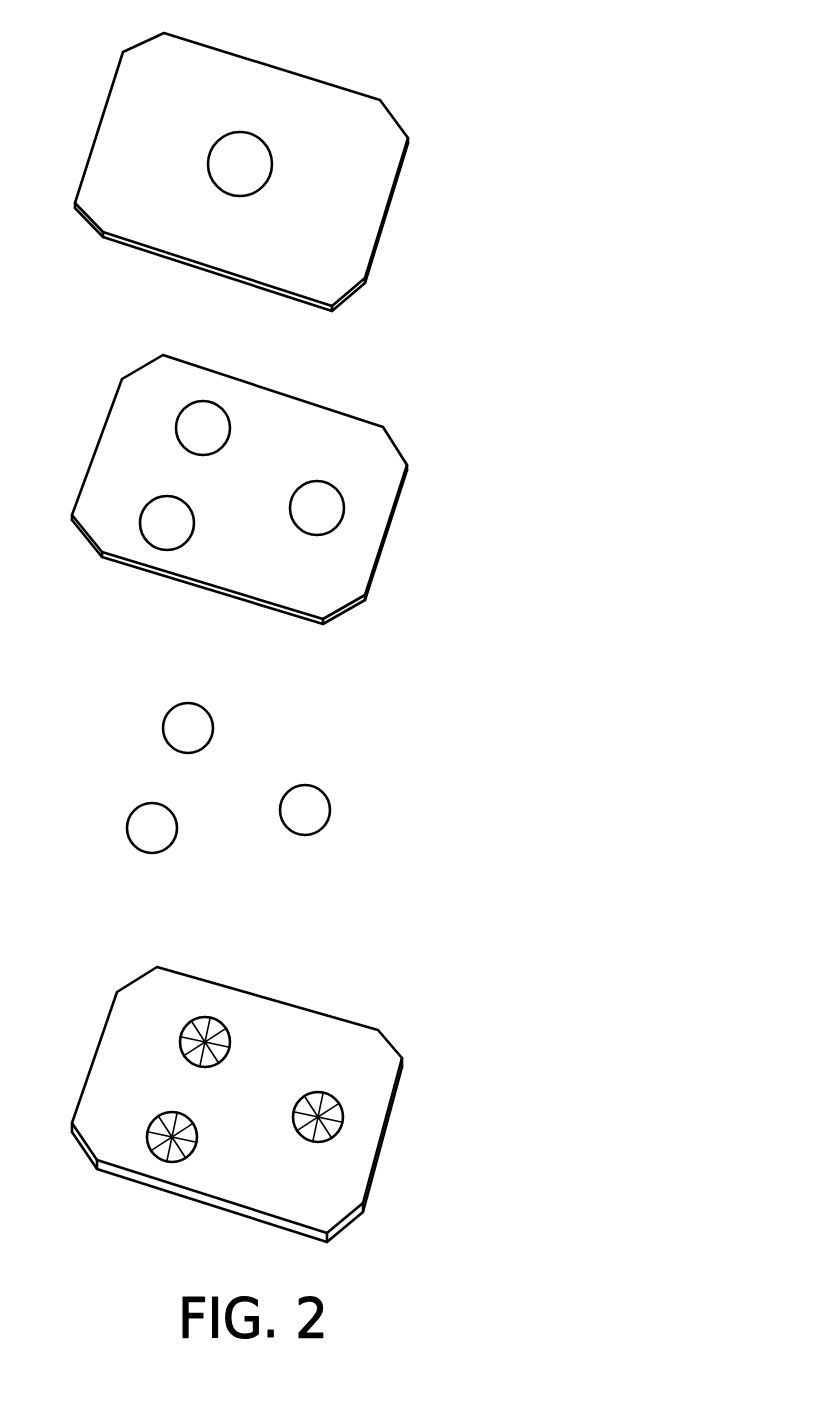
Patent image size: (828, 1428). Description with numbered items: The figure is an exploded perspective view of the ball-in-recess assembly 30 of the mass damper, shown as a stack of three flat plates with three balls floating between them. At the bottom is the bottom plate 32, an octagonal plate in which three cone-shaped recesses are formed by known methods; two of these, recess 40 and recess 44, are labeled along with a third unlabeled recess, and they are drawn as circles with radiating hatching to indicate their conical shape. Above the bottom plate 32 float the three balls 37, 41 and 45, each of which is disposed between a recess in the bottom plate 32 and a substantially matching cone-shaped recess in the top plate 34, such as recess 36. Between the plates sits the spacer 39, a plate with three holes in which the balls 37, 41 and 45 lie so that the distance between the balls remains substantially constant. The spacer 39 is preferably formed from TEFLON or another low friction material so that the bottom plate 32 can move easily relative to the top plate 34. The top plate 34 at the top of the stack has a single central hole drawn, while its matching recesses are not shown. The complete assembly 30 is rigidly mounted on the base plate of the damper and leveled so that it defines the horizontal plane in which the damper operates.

The assembly 30 is at (485, 73).
The bottom plate 32 is at (385, 1037).
The top plate 34 is at (410, 168).
The cone-shaped recess 36 is at (343, 1112).
The ball 37 is at (330, 807).
The spacer 39 is at (402, 450).
The cone-shaped recess 40 is at (147, 1152).
The ball 41 is at (132, 847).
The cone-shaped recess 44 is at (223, 1018).
The ball 45 is at (165, 725).